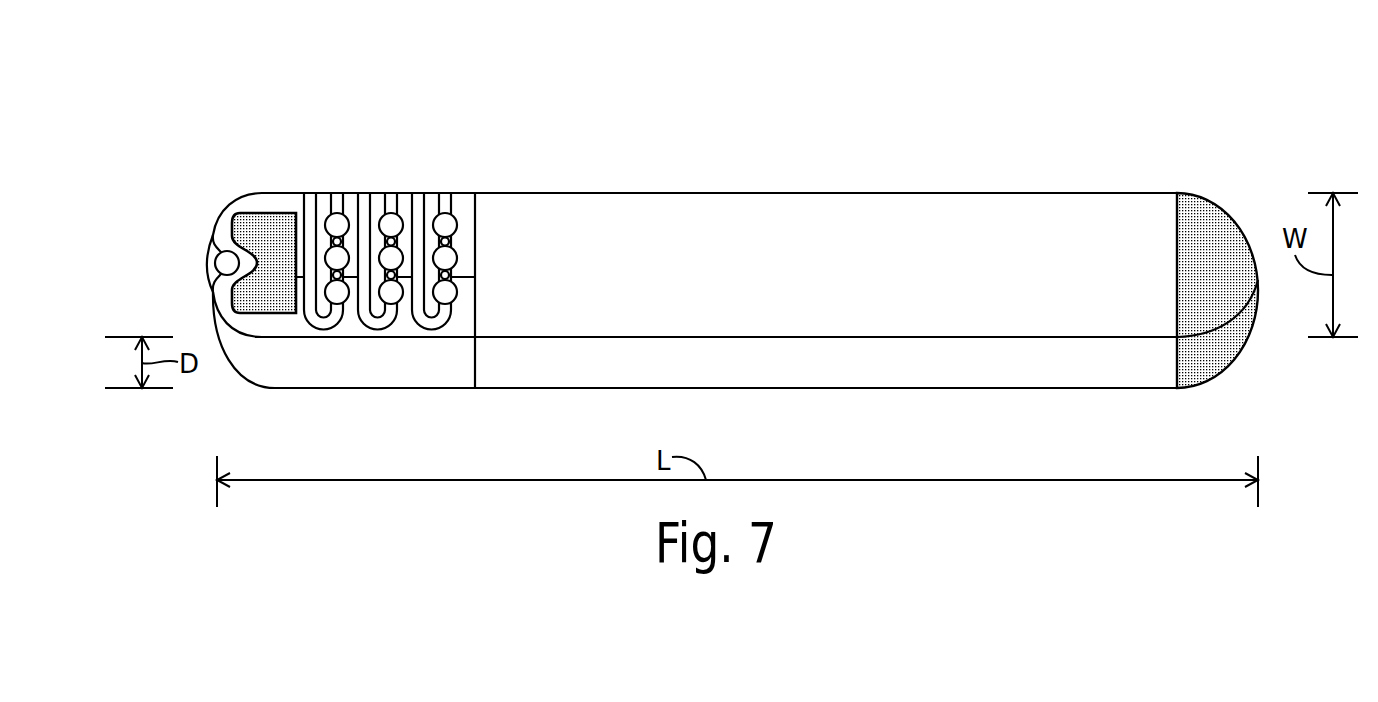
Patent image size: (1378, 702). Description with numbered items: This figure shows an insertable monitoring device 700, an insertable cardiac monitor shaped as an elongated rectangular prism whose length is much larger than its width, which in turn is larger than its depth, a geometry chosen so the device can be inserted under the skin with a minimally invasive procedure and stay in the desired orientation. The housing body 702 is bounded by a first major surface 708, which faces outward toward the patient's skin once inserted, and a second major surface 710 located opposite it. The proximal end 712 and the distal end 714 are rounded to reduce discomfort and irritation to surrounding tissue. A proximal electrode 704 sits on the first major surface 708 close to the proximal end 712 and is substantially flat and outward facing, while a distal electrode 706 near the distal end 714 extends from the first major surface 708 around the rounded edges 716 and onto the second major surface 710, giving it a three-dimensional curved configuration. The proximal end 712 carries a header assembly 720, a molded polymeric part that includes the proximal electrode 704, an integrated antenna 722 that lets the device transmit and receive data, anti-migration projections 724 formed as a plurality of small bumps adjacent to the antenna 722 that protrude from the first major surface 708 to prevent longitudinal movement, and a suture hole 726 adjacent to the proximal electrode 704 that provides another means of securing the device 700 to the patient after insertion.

The insertable monitoring device 700 is at (206, 110).
The housing 702 is at (1115, 182).
The proximal electrode 704 is at (268, 217).
The distal electrode 706 is at (1240, 328).
The first major surface 708 is at (842, 230).
The second major surface 710 is at (897, 390).
The proximal end 712 is at (226, 193).
The distal end 714 is at (1225, 192).
The rounded edges 716 is at (232, 366).
The header assembly 720 is at (359, 399).
The integrated antenna 722 is at (418, 197).
The anti-migration projections 724 is at (448, 258).
The suture hole 726 is at (224, 263).